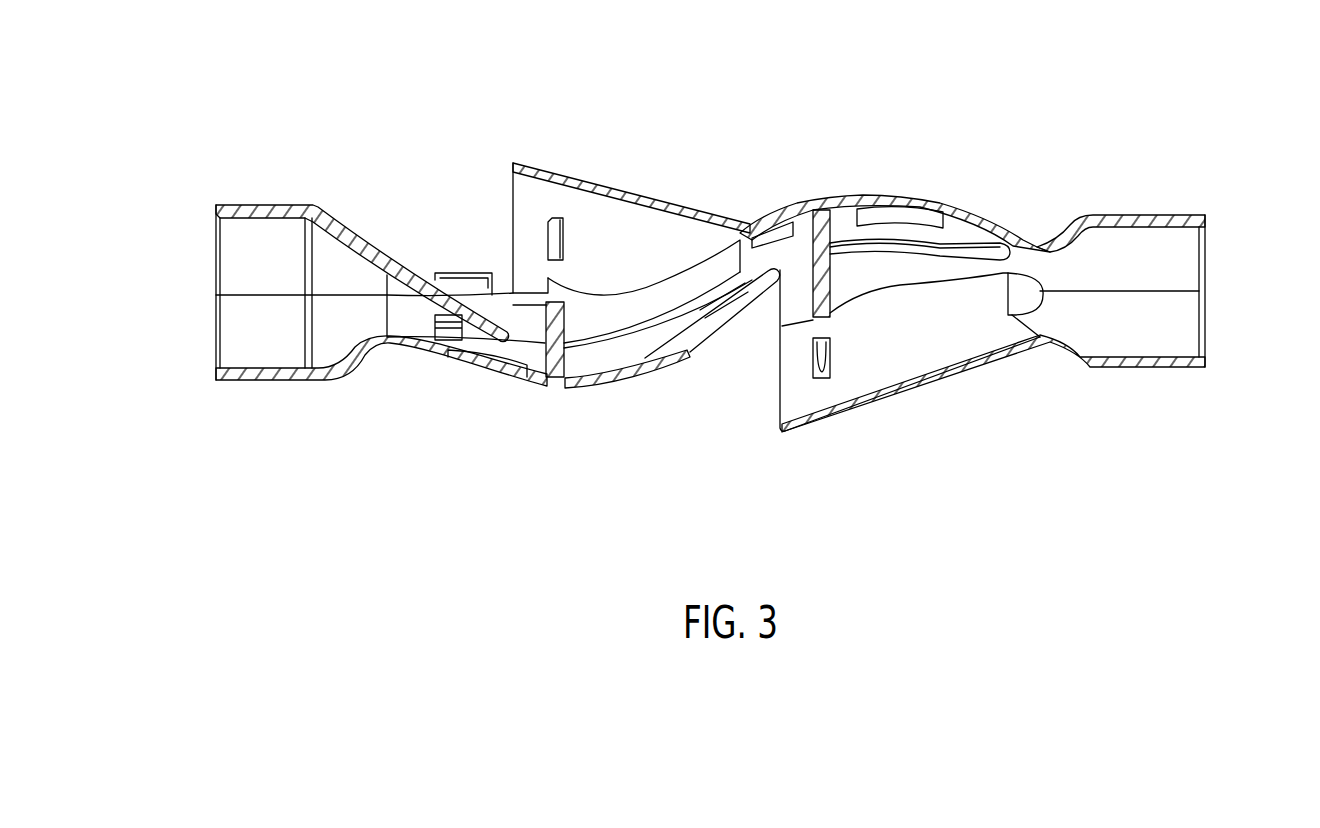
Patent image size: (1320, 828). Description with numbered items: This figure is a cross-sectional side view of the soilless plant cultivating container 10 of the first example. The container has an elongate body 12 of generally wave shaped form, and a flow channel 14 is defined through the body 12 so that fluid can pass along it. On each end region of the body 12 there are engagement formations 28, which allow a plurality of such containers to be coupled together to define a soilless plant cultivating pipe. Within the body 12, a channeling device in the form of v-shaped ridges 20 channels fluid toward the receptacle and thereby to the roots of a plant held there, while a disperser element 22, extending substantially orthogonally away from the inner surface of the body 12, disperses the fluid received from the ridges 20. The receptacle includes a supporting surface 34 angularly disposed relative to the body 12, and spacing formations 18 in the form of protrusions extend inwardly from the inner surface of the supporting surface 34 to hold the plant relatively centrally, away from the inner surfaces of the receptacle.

The soilless plant cultivating container 10 is at (322, 505).
The elongate body 12 is at (533, 383).
The flow channel 14 is at (180, 235).
The spacing formations 18 is at (560, 232).
The v-shaped ridges 20 is at (427, 293).
The disperser element 22 is at (557, 353).
The engagement formations 28 is at (281, 212).
The supporting surface 34 is at (515, 165).